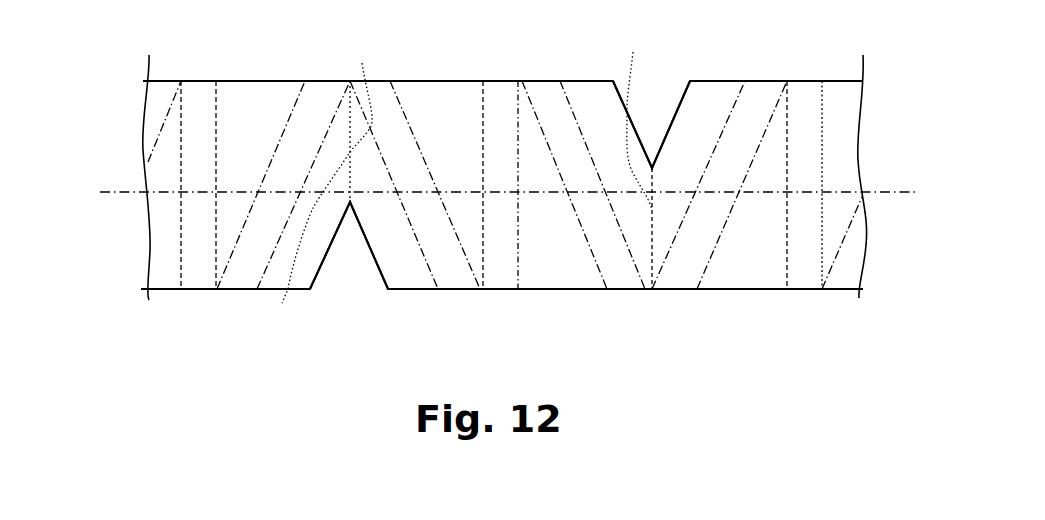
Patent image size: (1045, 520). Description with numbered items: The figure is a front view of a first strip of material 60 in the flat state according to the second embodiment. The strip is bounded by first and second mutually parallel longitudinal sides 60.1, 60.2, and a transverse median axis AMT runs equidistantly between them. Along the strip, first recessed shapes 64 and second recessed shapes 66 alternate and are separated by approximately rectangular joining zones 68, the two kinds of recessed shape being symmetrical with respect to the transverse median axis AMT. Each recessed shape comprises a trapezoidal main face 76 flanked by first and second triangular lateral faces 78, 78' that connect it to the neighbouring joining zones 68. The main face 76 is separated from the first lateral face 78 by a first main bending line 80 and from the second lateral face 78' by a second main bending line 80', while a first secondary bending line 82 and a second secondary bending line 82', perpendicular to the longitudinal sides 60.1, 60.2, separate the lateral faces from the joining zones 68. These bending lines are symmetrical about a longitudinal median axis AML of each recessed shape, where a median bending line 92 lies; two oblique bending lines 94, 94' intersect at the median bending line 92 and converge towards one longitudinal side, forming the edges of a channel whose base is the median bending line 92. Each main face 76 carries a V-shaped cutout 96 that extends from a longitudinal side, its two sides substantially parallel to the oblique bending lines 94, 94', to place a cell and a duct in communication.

The first strip of material 60 is at (851, 105).
The first longitudinal side 60.1 is at (172, 78).
The second longitudinal side 60.2 is at (160, 292).
The first recessed shape 64 is at (343, 278).
The second recessed shape 66 is at (660, 87).
The joining zone 68 is at (200, 289).
The main face 76 is at (307, 119).
The first triangular lateral face 78 is at (491, 187).
The second triangular lateral face 78' is at (459, 73).
The first main bending line 80 is at (412, 190).
The second main bending line 80' is at (588, 193).
The first secondary bending line 82 is at (363, 189).
The second secondary bending line 82' is at (698, 161).
The median bending line 92 is at (670, 328).
The oblique bending line 94 is at (249, 164).
The oblique bending line 94' is at (606, 180).
The cutout 96 is at (676, 117).
The transverse median axis AMT is at (117, 192).
The longitudinal median axis AML is at (452, 180).